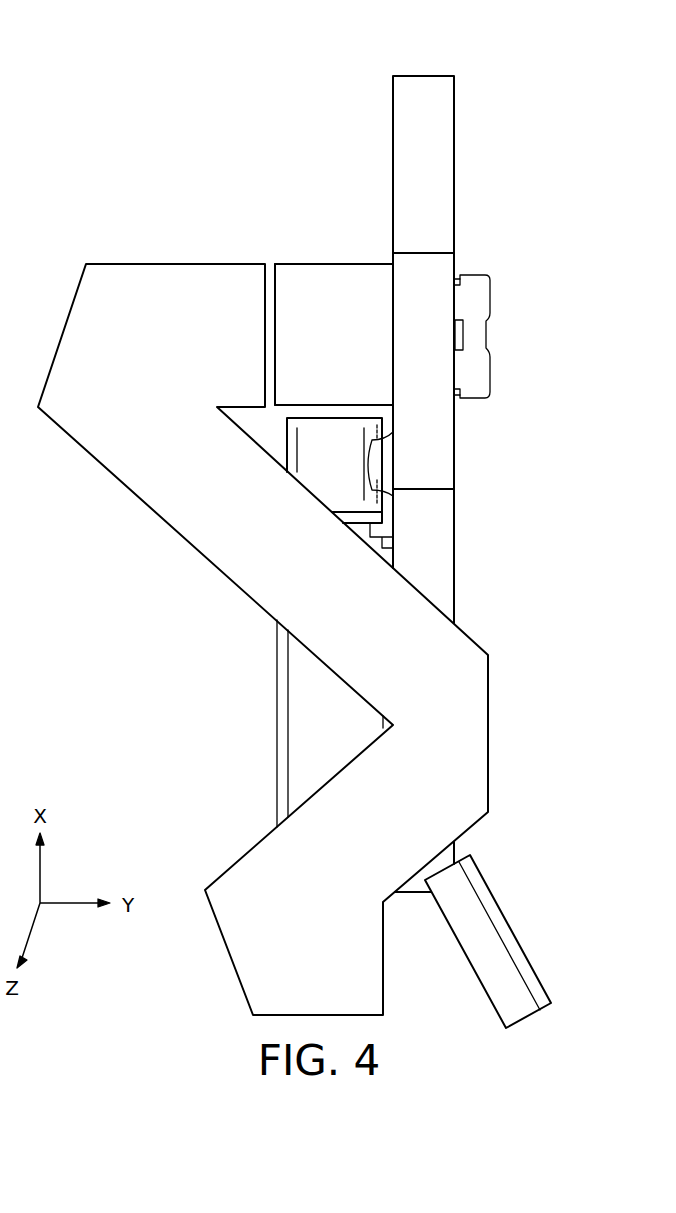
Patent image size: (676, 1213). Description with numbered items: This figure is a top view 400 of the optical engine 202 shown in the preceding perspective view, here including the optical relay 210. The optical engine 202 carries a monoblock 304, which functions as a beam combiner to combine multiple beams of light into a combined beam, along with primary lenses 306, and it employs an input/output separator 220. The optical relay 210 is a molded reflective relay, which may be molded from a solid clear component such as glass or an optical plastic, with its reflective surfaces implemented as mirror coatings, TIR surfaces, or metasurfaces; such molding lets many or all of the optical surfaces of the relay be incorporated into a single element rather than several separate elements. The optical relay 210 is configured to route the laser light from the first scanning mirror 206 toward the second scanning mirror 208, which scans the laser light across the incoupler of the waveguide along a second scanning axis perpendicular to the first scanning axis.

The top view 400 is at (157, 78).
The optical engine 202 is at (456, 239).
The first scanning mirror 206 is at (492, 335).
The second scanning mirror 208 is at (513, 927).
The optical relay 210 is at (146, 503).
The input/output separator 220 is at (336, 263).
The monoblock 304 is at (288, 244).
The primary lenses 306 is at (328, 482).